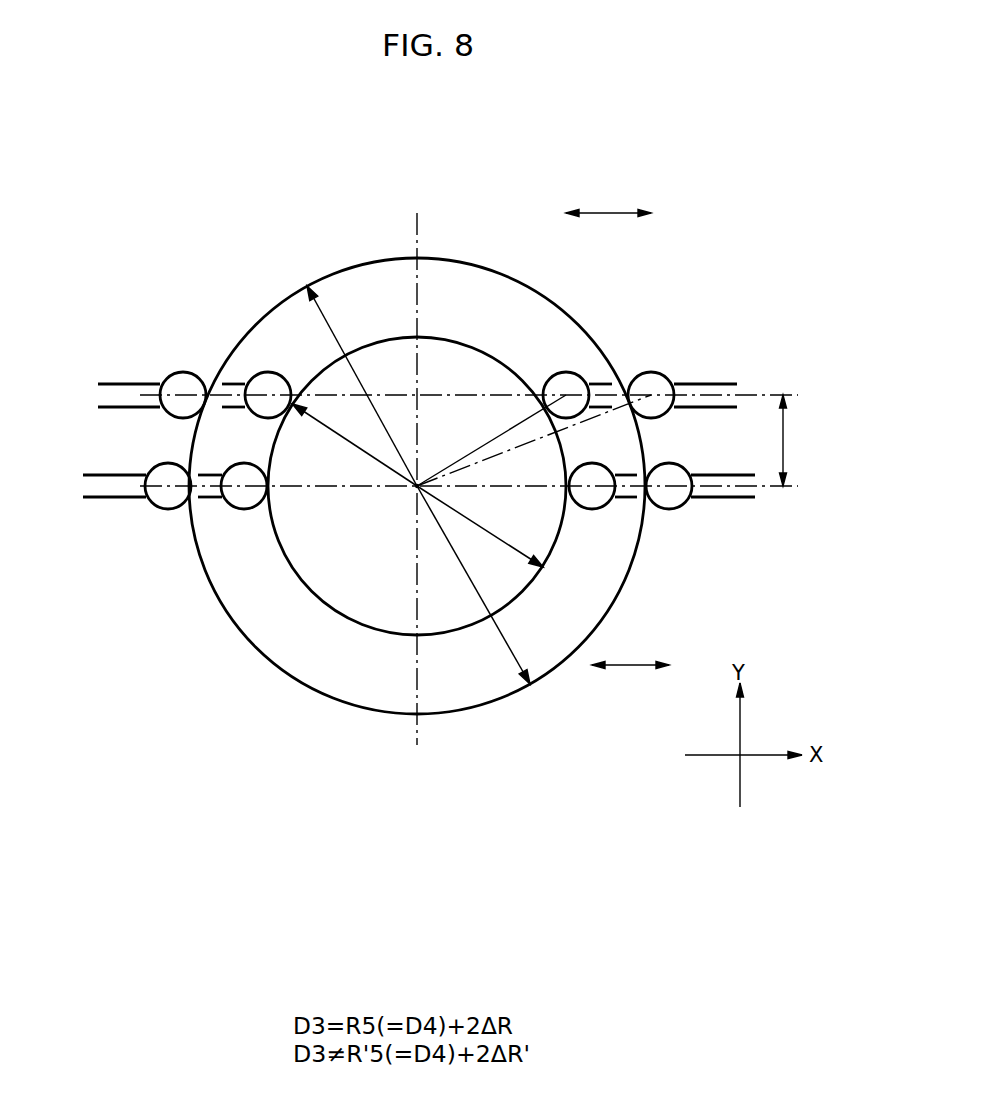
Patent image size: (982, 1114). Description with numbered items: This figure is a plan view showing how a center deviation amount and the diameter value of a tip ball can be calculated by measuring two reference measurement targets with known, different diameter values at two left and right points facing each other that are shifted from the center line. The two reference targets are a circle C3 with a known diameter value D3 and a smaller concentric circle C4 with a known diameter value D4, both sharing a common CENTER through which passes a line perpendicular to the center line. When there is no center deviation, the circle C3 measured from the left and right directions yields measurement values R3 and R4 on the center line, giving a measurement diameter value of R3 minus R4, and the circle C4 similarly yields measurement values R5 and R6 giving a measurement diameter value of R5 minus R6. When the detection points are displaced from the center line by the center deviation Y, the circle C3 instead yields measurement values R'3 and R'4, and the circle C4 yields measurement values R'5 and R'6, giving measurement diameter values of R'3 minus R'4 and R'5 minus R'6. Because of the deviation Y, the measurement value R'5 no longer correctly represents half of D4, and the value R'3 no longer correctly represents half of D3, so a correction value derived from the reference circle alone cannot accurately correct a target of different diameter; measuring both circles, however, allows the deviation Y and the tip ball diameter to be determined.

The circle C3 is at (472, 708).
The circle C4 is at (342, 618).
The diameter value D3 is at (418, 485).
The diameter value D4 is at (418, 485).
The center CENTER is at (417, 487).
The measurement value R3 is at (669, 410).
The measurement value R4 is at (168, 418).
The measurement value R5 is at (592, 410).
The measurement value R6 is at (244, 413).
The measurement value R'3 is at (651, 327).
The measurement value R'4 is at (183, 366).
The measurement value R'5 is at (566, 327).
The measurement value R'6 is at (268, 366).
The center deviation Y is at (790, 440).